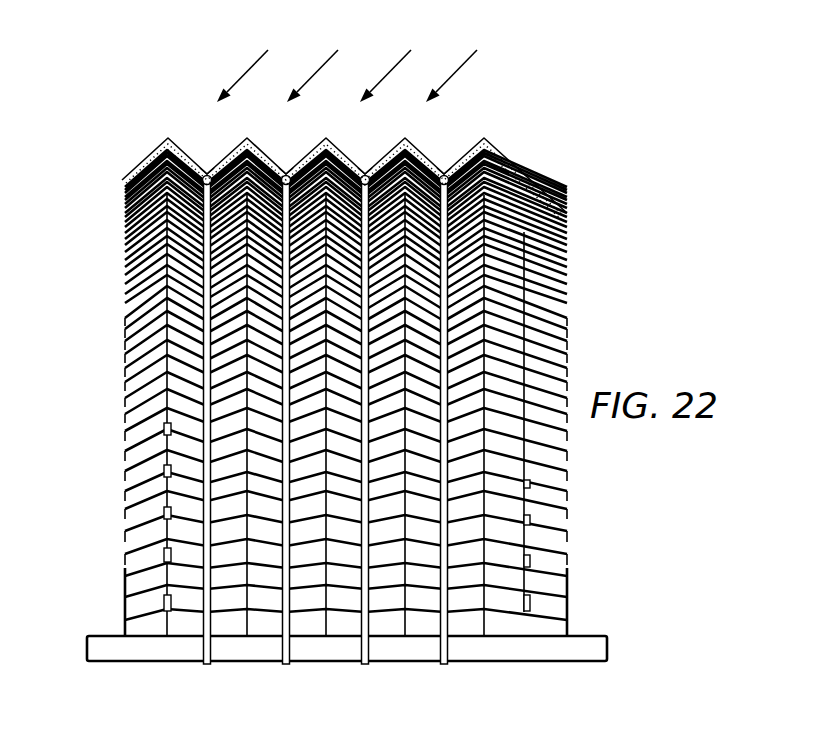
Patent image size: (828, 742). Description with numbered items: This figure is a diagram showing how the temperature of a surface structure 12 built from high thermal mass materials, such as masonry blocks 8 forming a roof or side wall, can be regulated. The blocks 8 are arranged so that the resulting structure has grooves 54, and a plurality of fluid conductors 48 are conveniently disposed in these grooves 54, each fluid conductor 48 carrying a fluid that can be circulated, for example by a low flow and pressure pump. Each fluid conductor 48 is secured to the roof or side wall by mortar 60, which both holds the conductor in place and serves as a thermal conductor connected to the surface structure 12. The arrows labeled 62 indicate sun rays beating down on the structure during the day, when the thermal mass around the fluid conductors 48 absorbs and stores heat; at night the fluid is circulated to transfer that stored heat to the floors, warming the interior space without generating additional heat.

The surface structure 12 is at (94, 322).
The block 8 is at (136, 585).
The fluid conductor 48 is at (215, 655).
The groove 54 is at (208, 153).
The mortar 60 is at (142, 166).
The center of circle 62 is at (256, 62).